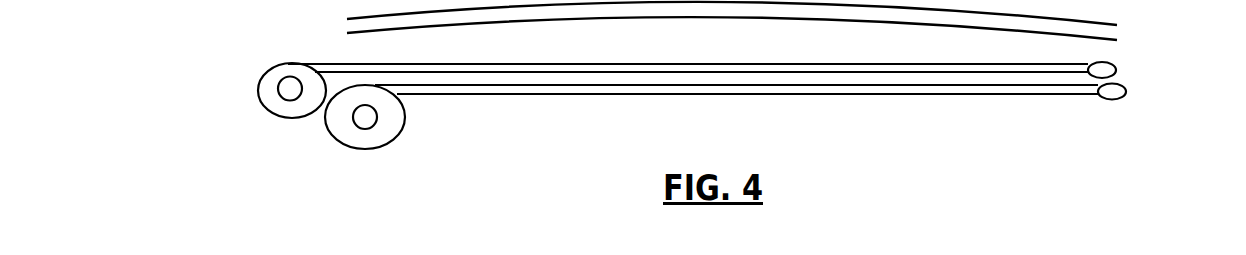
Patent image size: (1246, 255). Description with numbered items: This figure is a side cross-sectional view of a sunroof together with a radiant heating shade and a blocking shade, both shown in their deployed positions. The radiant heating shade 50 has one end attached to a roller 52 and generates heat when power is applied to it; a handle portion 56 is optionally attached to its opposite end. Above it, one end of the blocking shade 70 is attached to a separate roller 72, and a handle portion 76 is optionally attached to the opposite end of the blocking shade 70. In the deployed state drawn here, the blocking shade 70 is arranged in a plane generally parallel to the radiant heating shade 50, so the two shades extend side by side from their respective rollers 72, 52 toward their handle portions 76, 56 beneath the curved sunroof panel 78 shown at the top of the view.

The guide plate 78 is at (882, 7).
The blocking shade 70 is at (740, 62).
The radiant heating shade 50 is at (905, 95).
The roller 72 is at (282, 63).
The roller 52 is at (402, 127).
The handle portion 76 is at (1117, 70).
The handle portion 56 is at (1110, 99).